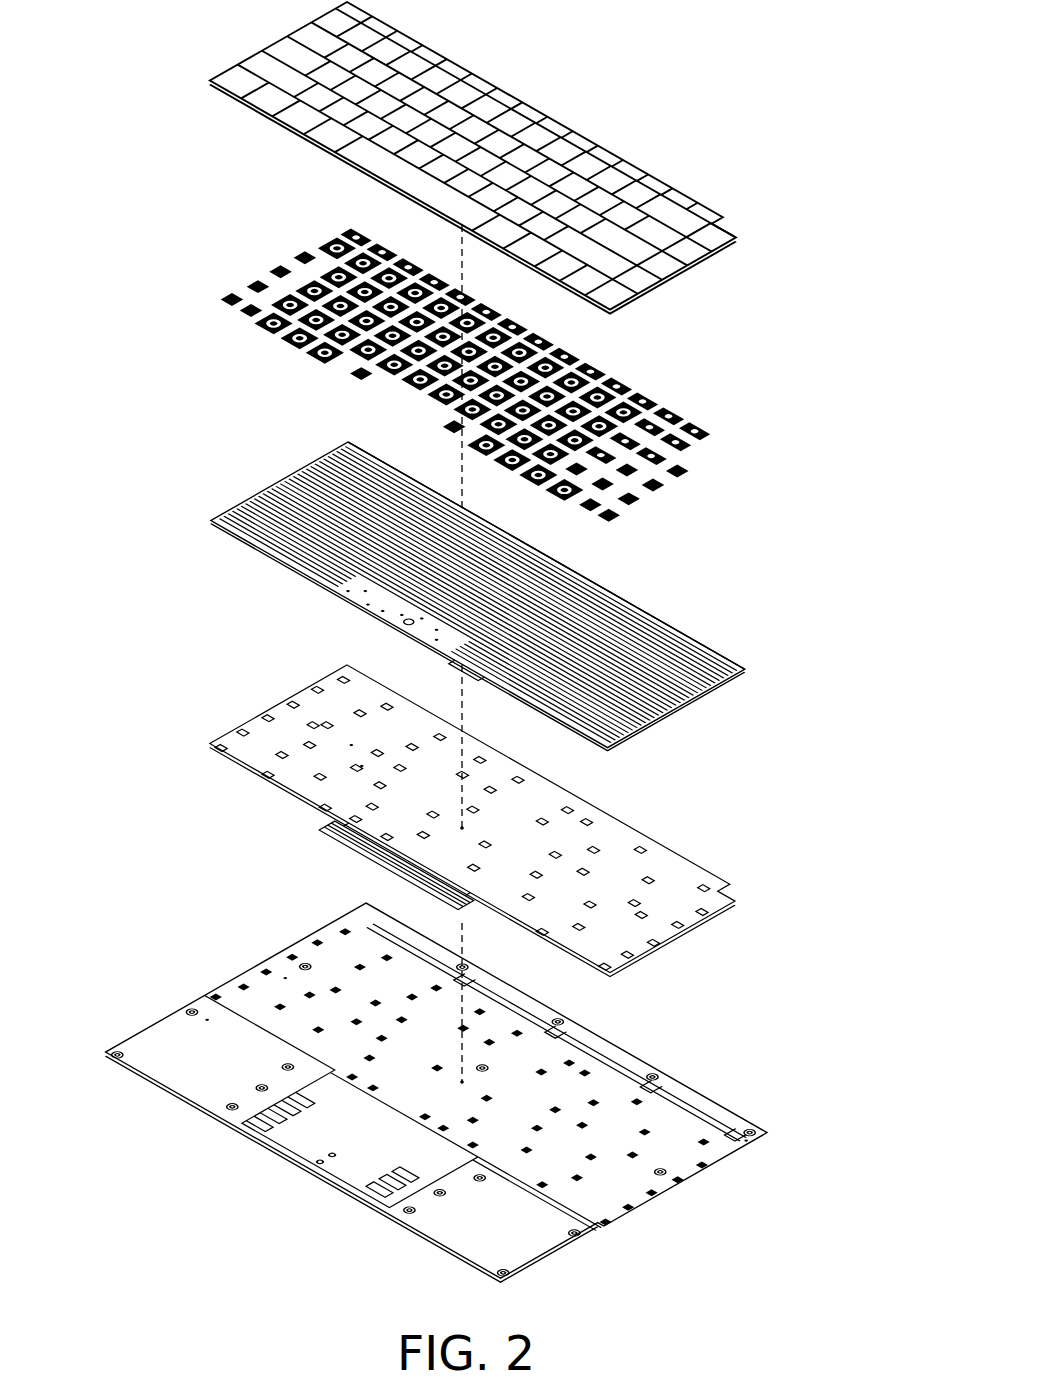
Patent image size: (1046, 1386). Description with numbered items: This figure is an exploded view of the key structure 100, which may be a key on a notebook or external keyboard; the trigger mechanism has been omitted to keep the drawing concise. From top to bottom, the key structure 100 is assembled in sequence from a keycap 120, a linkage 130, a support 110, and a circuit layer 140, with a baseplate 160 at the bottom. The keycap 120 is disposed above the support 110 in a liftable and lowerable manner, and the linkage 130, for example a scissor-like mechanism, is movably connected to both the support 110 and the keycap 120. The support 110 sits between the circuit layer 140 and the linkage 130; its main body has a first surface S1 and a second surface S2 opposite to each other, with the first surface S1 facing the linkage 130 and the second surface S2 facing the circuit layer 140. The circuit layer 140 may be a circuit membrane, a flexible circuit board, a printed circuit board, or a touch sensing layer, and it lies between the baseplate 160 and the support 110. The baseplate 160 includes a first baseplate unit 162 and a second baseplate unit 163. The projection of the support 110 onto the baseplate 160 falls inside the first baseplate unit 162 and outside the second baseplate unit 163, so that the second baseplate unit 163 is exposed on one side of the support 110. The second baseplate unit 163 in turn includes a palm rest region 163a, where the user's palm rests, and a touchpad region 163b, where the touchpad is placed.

The key structure 100 is at (110, 73).
The support 110 is at (541, 596).
The keycap 120 is at (773, 231).
The linkage 130 is at (773, 455).
The circuit layer 140 is at (780, 899).
The baseplate 160 is at (464, 1089).
The first baseplate unit 162 is at (486, 1066).
The second baseplate unit 163 is at (355, 1138).
The palm rest region 163a is at (220, 1060).
The touchpad region 163b is at (419, 1176).
The first surface S1 is at (546, 555).
The second surface S2 is at (677, 715).